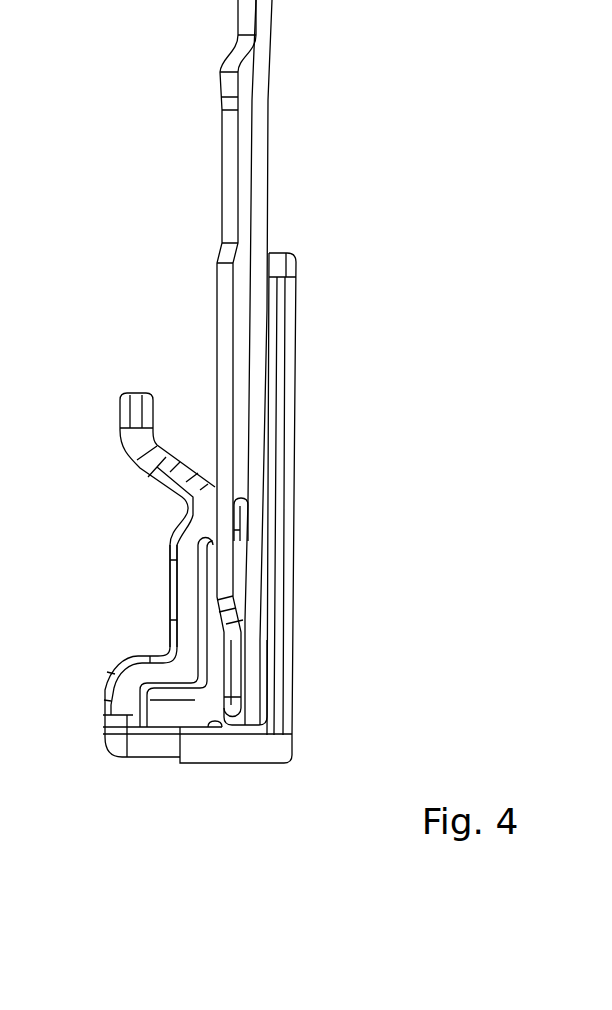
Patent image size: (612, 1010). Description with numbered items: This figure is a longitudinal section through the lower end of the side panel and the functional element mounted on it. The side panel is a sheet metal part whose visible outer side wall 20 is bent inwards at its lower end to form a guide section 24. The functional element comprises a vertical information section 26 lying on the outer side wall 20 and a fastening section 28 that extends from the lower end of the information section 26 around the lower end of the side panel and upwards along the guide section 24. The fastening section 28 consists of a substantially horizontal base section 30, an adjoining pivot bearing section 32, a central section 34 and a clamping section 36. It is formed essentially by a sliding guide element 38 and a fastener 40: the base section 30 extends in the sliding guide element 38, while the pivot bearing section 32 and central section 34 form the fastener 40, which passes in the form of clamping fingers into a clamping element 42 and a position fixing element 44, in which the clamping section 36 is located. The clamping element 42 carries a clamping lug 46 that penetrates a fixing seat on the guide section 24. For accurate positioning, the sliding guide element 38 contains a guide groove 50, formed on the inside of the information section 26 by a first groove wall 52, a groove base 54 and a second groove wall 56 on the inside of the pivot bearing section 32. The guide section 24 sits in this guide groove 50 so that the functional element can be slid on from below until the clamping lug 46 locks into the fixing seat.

The outer side wall 20 is at (253, 538).
The guide section 24 is at (218, 574).
The information section 26 is at (289, 382).
The fastening section 28 is at (275, 832).
The base section 30 is at (258, 748).
The pivot bearing section 32 is at (125, 690).
The central section 34 is at (186, 597).
The clamping section 36 is at (202, 482).
The sliding guide element 38 is at (187, 686).
The fastener 40 is at (132, 378).
The clamping element 42 is at (194, 448).
The position fixing element 44 is at (118, 397).
The clamping lug 46 is at (237, 512).
The guide groove 50 is at (158, 710).
The first groove wall 52 is at (252, 718).
The groove base 54 is at (231, 737).
The second groove wall 56 is at (131, 724).